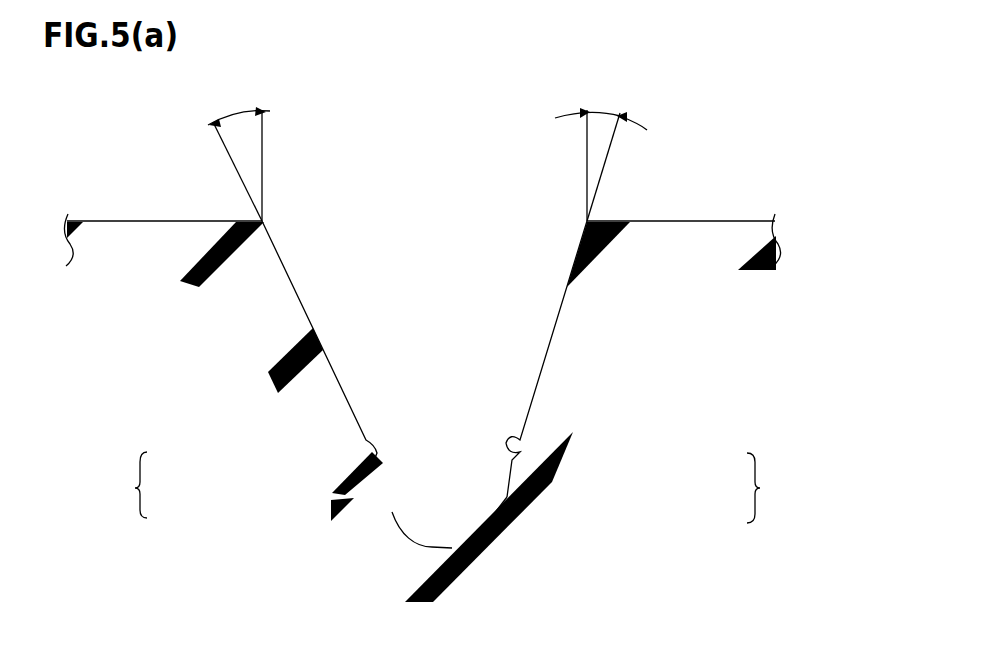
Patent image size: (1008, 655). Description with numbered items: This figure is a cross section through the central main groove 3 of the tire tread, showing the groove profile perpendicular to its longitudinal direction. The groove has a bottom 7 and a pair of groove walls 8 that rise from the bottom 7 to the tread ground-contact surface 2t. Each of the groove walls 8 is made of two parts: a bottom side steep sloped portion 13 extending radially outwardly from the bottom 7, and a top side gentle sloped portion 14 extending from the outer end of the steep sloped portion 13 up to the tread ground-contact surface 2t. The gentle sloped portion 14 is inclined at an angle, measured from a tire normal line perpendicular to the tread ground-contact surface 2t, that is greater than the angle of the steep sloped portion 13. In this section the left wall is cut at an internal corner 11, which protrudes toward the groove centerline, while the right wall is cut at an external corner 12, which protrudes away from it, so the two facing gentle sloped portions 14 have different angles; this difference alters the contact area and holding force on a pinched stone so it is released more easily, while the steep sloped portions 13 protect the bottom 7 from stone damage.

The tread ground-contact surface 2t is at (115, 220).
The central main groove 3 is at (442, 211).
The bottom 7 is at (448, 548).
The groove walls 8 is at (447, 487).
The internal corners 11 is at (151, 183).
The external corners 12 is at (570, 215).
The steep sloped portion 13 is at (392, 512).
The gentle sloped portion 14 is at (372, 455).